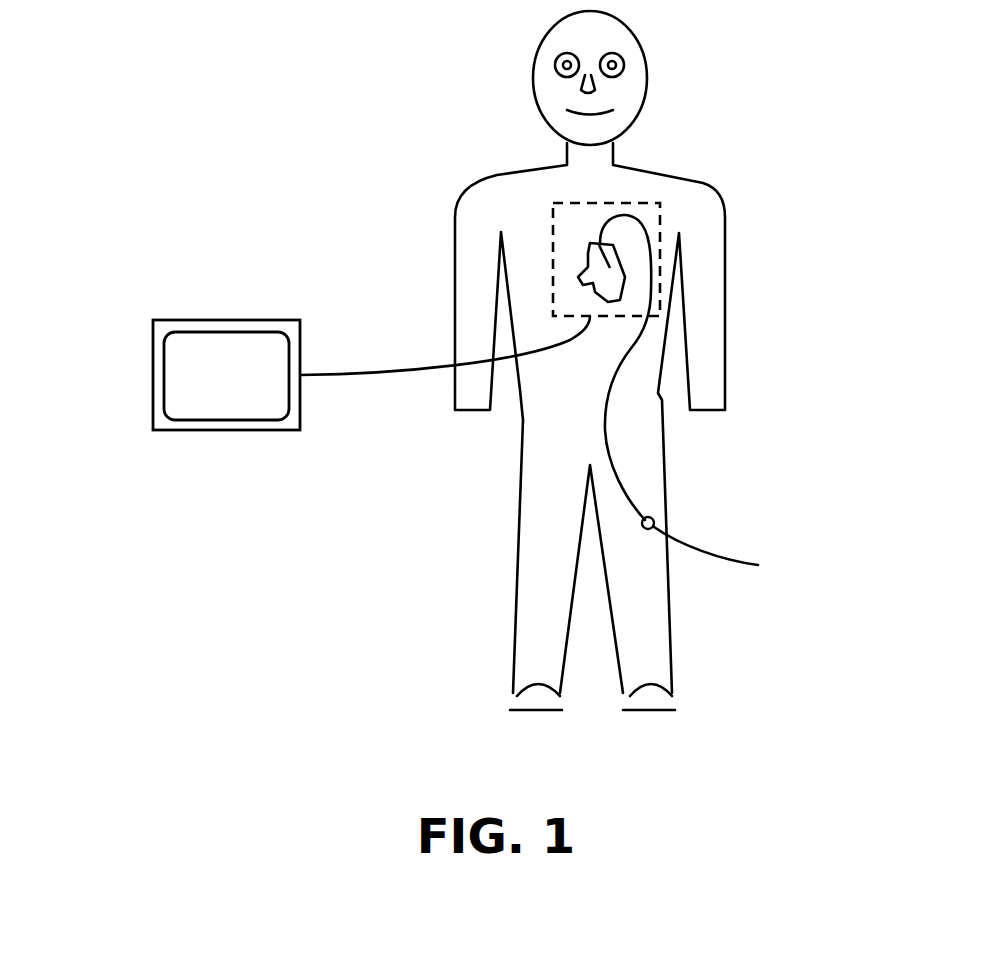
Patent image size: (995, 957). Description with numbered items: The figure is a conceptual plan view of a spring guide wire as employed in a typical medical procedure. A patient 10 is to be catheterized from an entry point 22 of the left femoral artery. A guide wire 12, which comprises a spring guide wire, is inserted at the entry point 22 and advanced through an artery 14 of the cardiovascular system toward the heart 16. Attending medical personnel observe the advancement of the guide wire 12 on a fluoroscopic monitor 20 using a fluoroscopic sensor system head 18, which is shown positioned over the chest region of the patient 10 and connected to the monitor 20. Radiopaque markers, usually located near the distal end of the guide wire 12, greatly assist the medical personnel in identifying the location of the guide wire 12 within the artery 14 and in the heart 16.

The patient 10 is at (790, 133).
The guide wire 12 is at (752, 557).
The artery 14 is at (633, 350).
The heart 16 is at (582, 267).
The fluoroscopic sensor system head 18 is at (652, 288).
The fluoroscopic monitor 20 is at (177, 375).
The entry point 22 is at (652, 518).